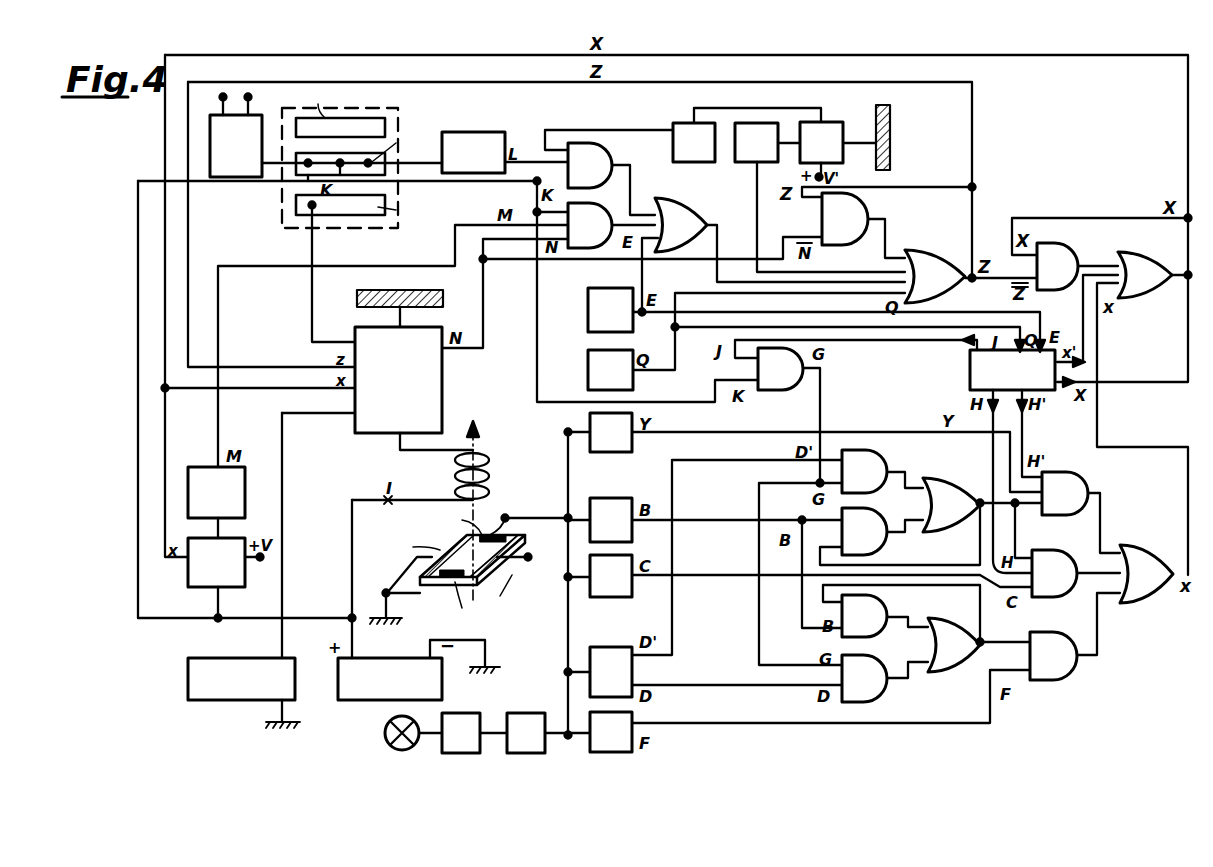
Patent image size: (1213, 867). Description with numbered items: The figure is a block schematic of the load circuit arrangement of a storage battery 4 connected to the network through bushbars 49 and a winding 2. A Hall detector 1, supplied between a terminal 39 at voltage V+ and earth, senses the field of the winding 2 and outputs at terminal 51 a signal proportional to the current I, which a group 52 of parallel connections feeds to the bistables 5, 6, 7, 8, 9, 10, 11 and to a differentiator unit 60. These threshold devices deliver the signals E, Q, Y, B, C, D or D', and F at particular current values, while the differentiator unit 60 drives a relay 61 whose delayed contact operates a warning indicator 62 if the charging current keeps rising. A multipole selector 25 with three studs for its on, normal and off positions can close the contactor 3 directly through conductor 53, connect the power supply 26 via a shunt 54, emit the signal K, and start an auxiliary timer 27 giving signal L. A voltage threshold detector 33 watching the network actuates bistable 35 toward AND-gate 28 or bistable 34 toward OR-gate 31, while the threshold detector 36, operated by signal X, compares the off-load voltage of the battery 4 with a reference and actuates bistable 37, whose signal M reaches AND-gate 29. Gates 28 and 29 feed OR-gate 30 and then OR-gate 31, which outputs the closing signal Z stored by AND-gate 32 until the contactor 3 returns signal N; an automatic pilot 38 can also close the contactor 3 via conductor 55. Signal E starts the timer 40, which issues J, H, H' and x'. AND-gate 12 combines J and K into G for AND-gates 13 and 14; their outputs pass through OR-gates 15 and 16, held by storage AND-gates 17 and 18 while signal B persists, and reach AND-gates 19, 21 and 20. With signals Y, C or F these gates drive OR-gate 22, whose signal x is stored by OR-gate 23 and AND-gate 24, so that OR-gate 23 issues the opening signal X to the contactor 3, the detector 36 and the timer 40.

The Hall detector 1 is at (450, 546).
The winding 2 is at (490, 485).
The contactor 3 is at (398, 380).
The battery 4 is at (390, 679).
The bistable 5 is at (610, 310).
The bistable 6 is at (610, 370).
The bistable 7 is at (611, 432).
The bistable 8 is at (611, 520).
The bistable 9 is at (611, 576).
The bistable 10 is at (611, 672).
The bistable 11 is at (611, 732).
The AND-gate 12 is at (780, 369).
The AND-gate 13 is at (864, 471).
The AND-gate 14 is at (864, 678).
The OR-gate 15 is at (951, 505).
The OR-gate 16 is at (954, 645).
The AND-gate 17 is at (864, 531).
The AND-gate 18 is at (864, 616).
The AND-gate 19 is at (1065, 493).
The AND-gate 20 is at (1053, 656).
The AND-gate 21 is at (1054, 573).
The OR-gate 22 is at (1146, 574).
The OR-gate 23 is at (1145, 275).
The AND-gate 24 is at (1057, 266).
The multipole selector 25 is at (392, 108).
The power supply 26 is at (236, 136).
The auxiliary timer 27 is at (473, 152).
The AND-gate 28 is at (590, 165).
The AND-gate 29 is at (590, 225).
The OR-gate 30 is at (681, 225).
The OR-gate 31 is at (935, 276).
The AND-gate 32 is at (845, 219).
The voltage threshold detector 33 is at (821, 142).
The bistable 34 is at (756, 142).
The bistable 35 is at (694, 142).
The threshold voltage detector facility 36 is at (216, 562).
The bistable 37 is at (216, 492).
The automatic pilot 38 is at (241, 679).
The terminal 39 is at (520, 570).
The timer 40 is at (1012, 370).
The bushbars 49 is at (890, 140).
The terminal 51 is at (505, 518).
The group of parallel connections 52 is at (568, 614).
The conductor 53 is at (312, 250).
The shunt 54 is at (138, 480).
The conductor 55 is at (282, 470).
The differentiator unit 60 is at (526, 733).
The relay 61 is at (461, 733).
The warning indicator 62 is at (380, 735).